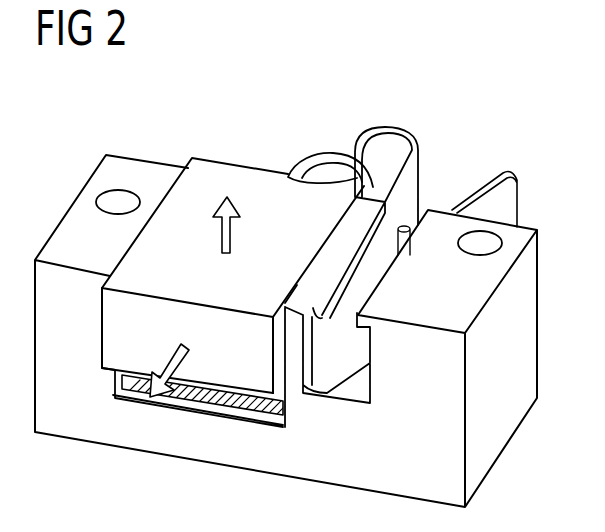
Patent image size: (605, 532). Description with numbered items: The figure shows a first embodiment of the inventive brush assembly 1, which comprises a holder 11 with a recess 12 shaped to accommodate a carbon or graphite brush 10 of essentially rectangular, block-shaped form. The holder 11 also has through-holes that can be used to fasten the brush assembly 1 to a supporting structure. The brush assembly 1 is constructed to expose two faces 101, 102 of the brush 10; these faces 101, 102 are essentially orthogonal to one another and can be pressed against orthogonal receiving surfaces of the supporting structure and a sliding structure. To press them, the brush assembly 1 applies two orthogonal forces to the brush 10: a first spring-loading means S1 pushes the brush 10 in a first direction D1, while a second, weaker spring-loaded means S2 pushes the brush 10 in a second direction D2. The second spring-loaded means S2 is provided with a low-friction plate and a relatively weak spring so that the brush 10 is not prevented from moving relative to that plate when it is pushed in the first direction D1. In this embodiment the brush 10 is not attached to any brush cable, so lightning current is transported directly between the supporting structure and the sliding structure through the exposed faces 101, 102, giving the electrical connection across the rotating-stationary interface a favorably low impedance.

The brush assembly 1 is at (530, 97).
The brush 10 is at (203, 245).
The holder 11 is at (102, 175).
The recess 12 is at (205, 407).
The face 101 is at (122, 334).
The face 102 is at (263, 175).
The first spring-loading means S1 is at (397, 127).
The second spring-loaded means S2 is at (257, 408).
The first direction D1 is at (148, 392).
The second direction D2 is at (230, 235).